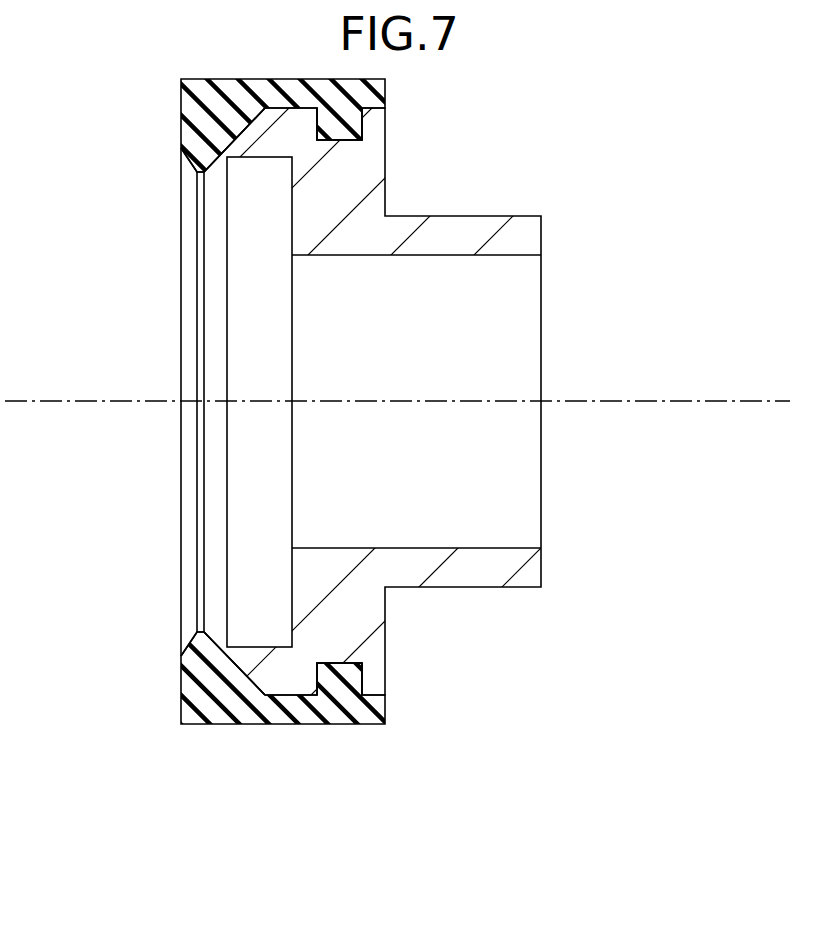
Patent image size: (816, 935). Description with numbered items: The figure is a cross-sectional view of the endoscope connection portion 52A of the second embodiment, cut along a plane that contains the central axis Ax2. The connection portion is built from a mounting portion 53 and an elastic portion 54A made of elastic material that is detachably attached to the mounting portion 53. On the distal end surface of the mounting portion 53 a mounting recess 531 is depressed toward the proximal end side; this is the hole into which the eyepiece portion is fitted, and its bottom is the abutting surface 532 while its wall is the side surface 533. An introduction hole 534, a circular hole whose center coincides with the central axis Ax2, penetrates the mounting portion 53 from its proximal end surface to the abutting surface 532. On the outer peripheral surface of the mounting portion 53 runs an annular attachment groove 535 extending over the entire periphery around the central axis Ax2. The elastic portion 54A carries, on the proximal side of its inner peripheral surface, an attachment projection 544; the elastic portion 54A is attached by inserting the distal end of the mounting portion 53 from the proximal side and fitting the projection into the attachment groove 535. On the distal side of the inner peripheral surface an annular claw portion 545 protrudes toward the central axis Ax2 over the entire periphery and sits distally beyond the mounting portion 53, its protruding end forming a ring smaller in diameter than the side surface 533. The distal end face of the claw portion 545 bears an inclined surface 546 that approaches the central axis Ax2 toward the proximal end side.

The endoscope connection portion 52A is at (408, 452).
The mounting portion 53 is at (458, 424).
The elastic portion 54A is at (408, 470).
The mounting recess 531 is at (155, 402).
The abutting surface 532 is at (293, 578).
The side surface 533 is at (259, 647).
The introduction hole 534 is at (488, 257).
The attachment groove 535 is at (338, 140).
The attachment projection 544 is at (247, 675).
The claw portion 545 is at (181, 667).
The inclined surface 546 is at (188, 162).
The central axis Ax2 is at (745, 400).